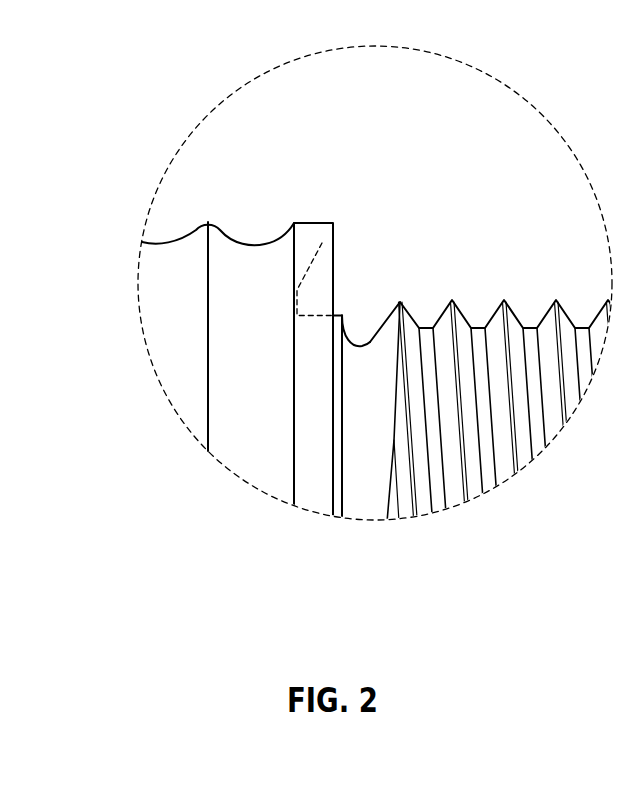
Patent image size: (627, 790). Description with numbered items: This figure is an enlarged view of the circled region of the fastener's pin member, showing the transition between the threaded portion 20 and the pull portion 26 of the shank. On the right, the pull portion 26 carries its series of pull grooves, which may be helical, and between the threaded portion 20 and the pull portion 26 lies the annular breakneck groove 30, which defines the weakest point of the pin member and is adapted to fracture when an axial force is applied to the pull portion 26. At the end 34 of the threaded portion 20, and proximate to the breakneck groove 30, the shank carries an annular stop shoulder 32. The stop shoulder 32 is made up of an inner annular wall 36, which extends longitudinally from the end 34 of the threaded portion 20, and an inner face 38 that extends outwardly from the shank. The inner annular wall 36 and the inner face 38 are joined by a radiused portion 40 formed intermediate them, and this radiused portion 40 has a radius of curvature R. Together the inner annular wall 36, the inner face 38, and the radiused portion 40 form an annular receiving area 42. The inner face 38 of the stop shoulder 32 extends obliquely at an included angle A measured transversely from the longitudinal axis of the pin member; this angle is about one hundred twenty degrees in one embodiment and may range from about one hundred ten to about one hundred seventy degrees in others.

The threaded portion 20 is at (247, 418).
The pull portion 26 is at (487, 405).
The breakneck groove 30 is at (358, 470).
The stop shoulder 32 is at (334, 222).
The end of the threaded portion 34 is at (294, 223).
The inner annular wall 36 is at (338, 315).
The inner face 38 is at (310, 265).
The radiused portion 40 is at (300, 308).
The annular receiving area 42 is at (306, 297).
The included angle A is at (322, 243).
The radius of curvature R is at (298, 313).